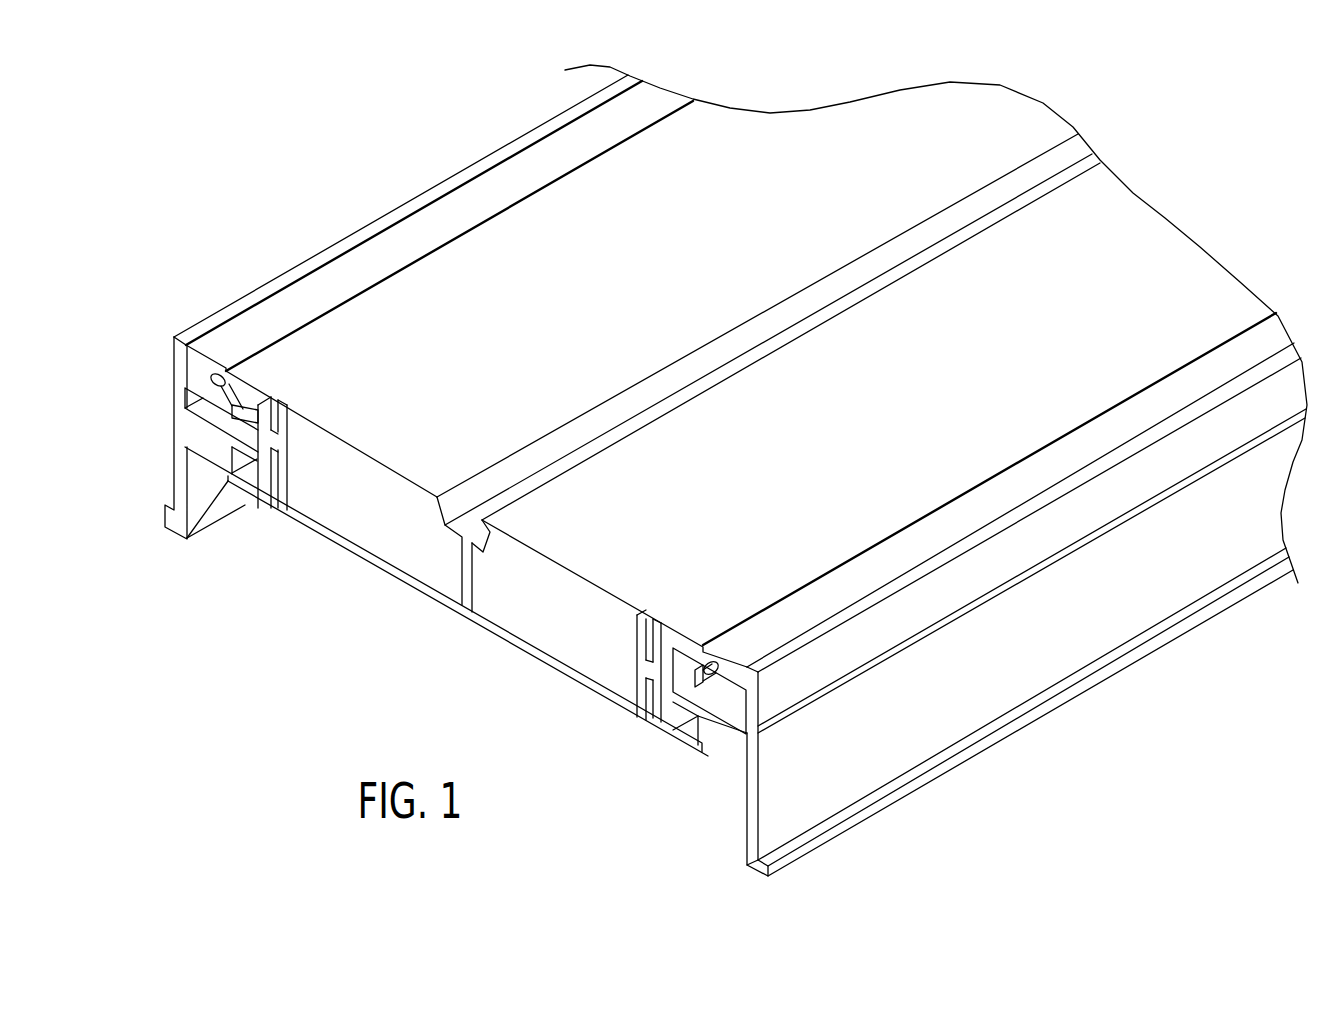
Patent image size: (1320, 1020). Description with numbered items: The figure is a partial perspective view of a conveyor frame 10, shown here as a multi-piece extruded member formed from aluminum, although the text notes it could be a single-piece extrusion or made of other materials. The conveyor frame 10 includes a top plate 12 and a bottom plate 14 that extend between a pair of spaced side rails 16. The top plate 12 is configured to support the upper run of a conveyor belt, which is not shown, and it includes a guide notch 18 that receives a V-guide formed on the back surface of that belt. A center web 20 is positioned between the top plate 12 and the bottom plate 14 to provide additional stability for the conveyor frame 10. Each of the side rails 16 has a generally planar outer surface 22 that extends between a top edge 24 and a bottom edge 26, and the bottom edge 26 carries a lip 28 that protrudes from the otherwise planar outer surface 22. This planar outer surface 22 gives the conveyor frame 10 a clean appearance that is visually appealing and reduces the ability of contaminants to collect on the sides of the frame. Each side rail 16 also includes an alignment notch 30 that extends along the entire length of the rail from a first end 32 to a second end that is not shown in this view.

The conveyor frame 10 is at (395, 660).
The top plate 12 is at (577, 570).
The bottom plate 14 is at (548, 660).
The side rails 16 is at (174, 475).
The guide notch 18 is at (553, 447).
The center web 20 is at (460, 580).
The outer surface 22 is at (174, 370).
The top edge 24 is at (868, 603).
The bottom edge 26 is at (750, 868).
The lip 28 is at (984, 744).
The alignment notch 30 is at (1028, 568).
The first end 32 is at (727, 740).